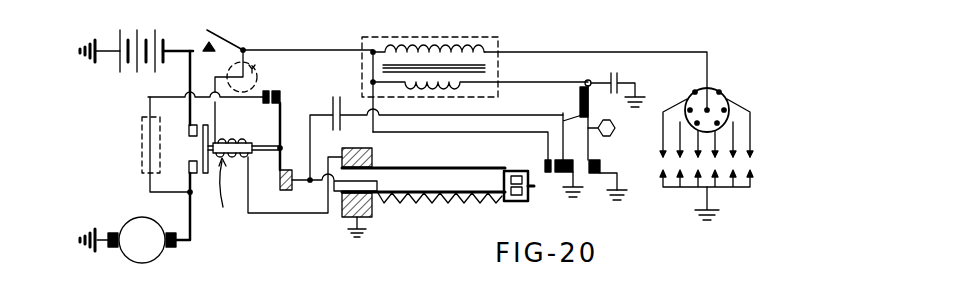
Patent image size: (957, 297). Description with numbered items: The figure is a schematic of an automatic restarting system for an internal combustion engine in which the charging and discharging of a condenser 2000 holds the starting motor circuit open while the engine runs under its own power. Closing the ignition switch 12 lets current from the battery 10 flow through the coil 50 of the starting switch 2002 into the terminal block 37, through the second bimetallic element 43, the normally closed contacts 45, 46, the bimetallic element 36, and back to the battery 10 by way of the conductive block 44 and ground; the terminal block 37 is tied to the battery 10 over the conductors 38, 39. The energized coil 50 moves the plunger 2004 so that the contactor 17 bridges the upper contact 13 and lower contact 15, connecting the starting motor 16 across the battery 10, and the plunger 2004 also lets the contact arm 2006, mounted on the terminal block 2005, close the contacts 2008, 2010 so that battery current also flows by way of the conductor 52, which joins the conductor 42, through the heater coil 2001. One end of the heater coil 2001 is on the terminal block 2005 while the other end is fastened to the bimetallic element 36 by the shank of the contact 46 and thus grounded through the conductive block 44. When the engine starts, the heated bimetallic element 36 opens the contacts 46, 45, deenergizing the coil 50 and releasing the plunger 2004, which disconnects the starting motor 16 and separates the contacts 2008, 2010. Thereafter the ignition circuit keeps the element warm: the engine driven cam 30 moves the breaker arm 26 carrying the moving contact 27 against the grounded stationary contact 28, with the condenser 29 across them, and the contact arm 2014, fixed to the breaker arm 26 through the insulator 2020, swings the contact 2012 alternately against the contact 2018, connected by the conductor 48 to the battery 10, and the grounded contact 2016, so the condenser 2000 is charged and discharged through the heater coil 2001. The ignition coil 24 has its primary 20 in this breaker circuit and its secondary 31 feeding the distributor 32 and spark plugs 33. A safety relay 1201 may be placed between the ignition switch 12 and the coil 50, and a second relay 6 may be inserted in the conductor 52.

The battery 10 is at (122, 34).
The conductor 39 is at (203, 45).
The ignition switch 12 is at (240, 46).
The safety relay 1201 is at (233, 70).
The conductor 38 is at (214, 106).
The conductor 52 is at (145, 97).
The contact 2010 is at (265, 88).
The contact 2008 is at (277, 91).
The contact arm 2006 is at (283, 114).
The second relay 6 is at (141, 125).
The upper contact 13 is at (188, 128).
The contactor 17 is at (200, 148).
The lower contact 15 is at (187, 167).
The coil 50 is at (219, 142).
The plunger 2004 is at (255, 153).
The starting switch 2002 is at (228, 191).
The terminal block 2005 is at (296, 185).
The conductor 42 is at (193, 233).
The starting motor 16 is at (152, 249).
The conductor 48 is at (287, 50).
The ignition coil 24 is at (416, 38).
The secondary 31 is at (445, 48).
The primary 20 is at (452, 90).
The condenser 2000 is at (347, 89).
The terminal block 37 is at (372, 158).
The second bimetallic element 43 is at (437, 165).
The conductive block 44 is at (342, 218).
The heater coil 2001 is at (380, 194).
The bimetallic element 36 is at (447, 198).
The contact 45 is at (502, 162).
The contact 46 is at (530, 172).
The contact 2018 is at (527, 200).
The contact 2012 is at (546, 188).
The contact arm 2014 is at (560, 131).
The insulator 2020 is at (579, 91).
The breaker arm 26 is at (591, 107).
The condenser 29 is at (618, 79).
The cam 30 is at (615, 127).
The moving contact 27 is at (597, 160).
The stationary contact 28 is at (606, 163).
The contact 2016 is at (610, 200).
The distributor 32 is at (721, 90).
The spark plugs 33 is at (752, 168).